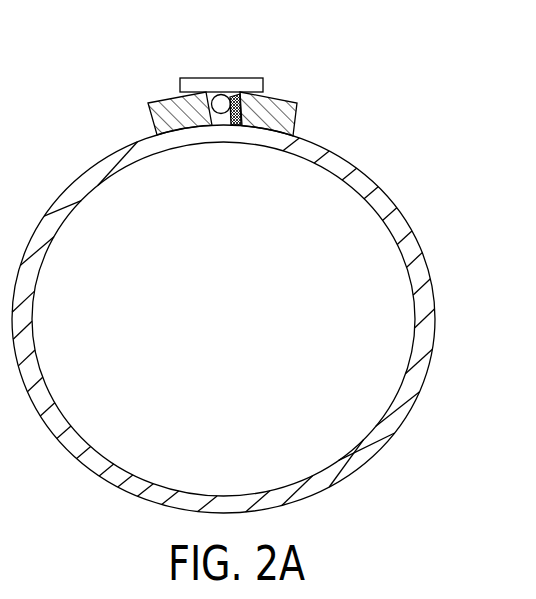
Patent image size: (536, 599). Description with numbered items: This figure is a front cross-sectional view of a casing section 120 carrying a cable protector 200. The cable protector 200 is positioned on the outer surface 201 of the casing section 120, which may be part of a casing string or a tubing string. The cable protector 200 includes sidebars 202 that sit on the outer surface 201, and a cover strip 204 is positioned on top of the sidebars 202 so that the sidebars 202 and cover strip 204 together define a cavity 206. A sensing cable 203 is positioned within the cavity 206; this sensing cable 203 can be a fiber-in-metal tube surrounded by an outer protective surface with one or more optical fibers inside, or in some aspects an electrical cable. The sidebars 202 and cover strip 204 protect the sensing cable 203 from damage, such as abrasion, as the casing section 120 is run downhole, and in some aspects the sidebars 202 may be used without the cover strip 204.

The casing section 120 is at (383, 197).
The cable protector 200 is at (273, 81).
The outer surface 201 is at (433, 328).
The sidebars 202 is at (293, 108).
The sensing cable 203 is at (211, 92).
The cover strip 204 is at (248, 79).
The cavity 206 is at (265, 92).